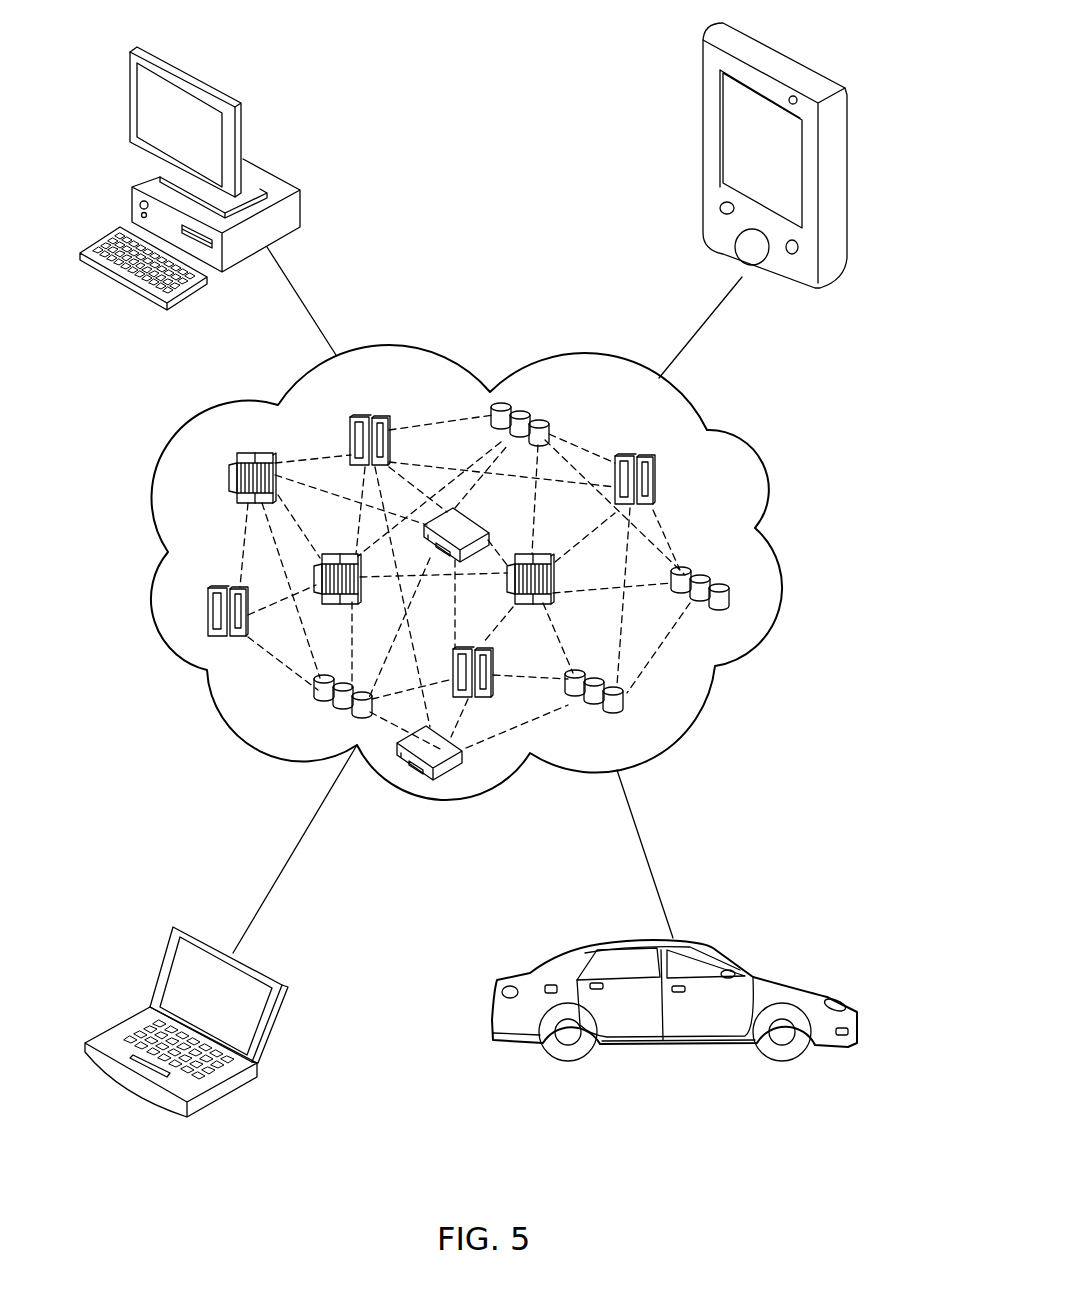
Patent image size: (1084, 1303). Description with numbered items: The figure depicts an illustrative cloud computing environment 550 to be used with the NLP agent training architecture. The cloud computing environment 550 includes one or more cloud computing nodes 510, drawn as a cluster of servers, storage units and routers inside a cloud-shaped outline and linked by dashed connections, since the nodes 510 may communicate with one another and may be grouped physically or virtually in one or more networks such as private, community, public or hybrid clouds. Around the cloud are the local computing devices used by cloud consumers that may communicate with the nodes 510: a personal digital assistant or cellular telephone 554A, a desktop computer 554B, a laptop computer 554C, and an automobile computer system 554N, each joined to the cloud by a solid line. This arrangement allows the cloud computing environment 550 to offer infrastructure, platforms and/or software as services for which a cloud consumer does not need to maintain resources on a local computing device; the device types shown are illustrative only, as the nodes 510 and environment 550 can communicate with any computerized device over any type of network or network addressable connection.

The cloud computing nodes 510 is at (715, 506).
The cloud computing environment 550 is at (758, 647).
The personal digital assistant (PDA) or cellular telephone 554A is at (700, 100).
The desktop computer 554B is at (300, 203).
The laptop computer 554C is at (283, 993).
The automobile computer system 554N is at (857, 1000).